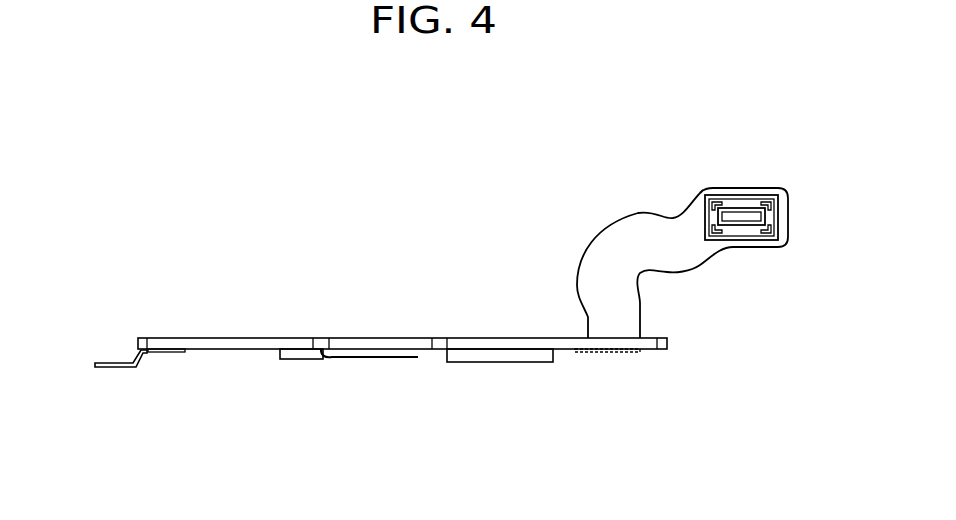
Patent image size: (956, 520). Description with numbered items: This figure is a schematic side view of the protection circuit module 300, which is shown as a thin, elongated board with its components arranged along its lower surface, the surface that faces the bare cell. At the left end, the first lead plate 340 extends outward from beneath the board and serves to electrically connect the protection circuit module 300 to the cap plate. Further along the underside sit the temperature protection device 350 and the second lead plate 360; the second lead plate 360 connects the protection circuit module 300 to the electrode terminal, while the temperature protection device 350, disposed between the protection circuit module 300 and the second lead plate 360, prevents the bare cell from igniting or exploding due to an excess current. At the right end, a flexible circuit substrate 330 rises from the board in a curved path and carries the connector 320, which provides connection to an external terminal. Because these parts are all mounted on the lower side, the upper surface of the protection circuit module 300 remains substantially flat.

The protection circuit module 300 is at (238, 343).
The connector 320 is at (740, 198).
The flexible circuit substrate (FCB) 330 is at (608, 251).
The first lead plate 340 is at (122, 370).
The temperature protection device 350 is at (296, 362).
The second lead plate 360 is at (378, 360).